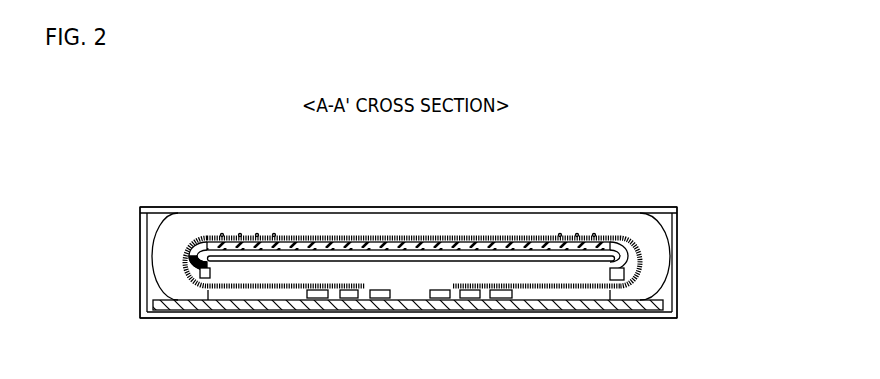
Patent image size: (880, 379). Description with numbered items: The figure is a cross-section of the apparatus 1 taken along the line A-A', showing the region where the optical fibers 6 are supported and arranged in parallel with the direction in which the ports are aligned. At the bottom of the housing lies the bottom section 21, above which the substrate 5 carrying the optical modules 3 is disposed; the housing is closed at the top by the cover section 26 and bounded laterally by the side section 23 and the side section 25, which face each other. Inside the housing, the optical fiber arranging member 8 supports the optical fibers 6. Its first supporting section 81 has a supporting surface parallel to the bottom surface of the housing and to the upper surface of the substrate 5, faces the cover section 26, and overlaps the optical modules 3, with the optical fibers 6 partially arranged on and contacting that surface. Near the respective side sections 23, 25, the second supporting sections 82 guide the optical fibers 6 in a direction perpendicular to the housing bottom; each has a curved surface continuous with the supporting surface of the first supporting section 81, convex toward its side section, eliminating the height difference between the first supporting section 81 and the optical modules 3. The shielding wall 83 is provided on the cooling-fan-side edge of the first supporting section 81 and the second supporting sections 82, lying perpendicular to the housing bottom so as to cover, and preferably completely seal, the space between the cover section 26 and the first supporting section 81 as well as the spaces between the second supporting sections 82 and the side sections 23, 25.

The apparatus 1 is at (722, 121).
The optical modules 3 is at (317, 300).
The substrate 5 is at (207, 306).
The optical fibers 6 is at (437, 238).
The optical fiber arranging member 8 is at (666, 213).
The bottom section 21 is at (152, 314).
The side section 23 is at (678, 264).
The side section 25 is at (142, 224).
The cover section 26 is at (171, 210).
The first supporting section 81 is at (437, 259).
The second supporting sections 82 is at (179, 240).
The shielding wall 83 is at (638, 222).